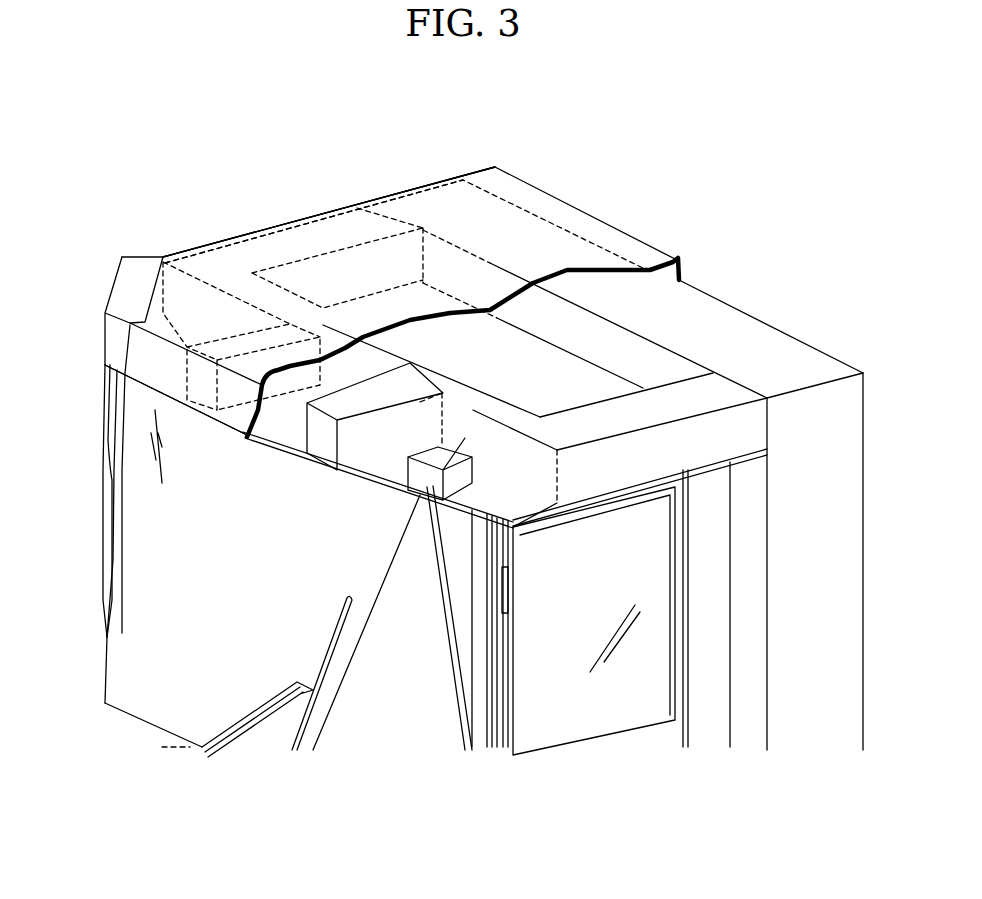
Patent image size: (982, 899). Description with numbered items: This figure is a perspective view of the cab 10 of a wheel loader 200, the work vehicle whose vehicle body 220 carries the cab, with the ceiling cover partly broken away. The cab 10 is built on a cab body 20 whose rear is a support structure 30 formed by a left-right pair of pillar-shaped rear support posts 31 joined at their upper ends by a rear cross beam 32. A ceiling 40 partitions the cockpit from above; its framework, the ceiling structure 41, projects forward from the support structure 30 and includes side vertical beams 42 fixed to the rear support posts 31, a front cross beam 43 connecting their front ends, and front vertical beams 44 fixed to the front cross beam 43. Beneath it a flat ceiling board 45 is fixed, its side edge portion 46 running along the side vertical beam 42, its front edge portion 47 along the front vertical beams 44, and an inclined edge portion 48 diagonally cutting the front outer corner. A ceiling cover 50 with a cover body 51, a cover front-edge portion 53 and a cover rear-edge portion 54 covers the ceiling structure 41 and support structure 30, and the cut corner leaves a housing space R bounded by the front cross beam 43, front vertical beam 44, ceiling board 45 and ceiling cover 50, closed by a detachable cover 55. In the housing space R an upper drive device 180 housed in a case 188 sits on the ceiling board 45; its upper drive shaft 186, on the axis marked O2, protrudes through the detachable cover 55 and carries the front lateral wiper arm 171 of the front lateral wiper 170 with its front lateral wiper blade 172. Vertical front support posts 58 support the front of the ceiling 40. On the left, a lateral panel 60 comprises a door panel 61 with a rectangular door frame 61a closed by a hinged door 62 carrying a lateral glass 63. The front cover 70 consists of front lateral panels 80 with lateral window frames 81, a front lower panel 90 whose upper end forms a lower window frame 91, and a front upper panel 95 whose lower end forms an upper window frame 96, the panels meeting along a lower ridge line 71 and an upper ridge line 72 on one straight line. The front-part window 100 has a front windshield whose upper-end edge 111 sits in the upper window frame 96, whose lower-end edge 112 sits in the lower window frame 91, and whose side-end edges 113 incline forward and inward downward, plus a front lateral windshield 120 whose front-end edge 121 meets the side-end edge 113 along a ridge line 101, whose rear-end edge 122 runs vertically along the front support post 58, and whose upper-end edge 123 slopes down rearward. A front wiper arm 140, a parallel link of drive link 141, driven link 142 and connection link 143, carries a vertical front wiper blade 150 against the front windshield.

The cab 10 is at (172, 205).
The cab body 20 is at (267, 218).
The support structure 30 is at (860, 547).
The rear support post 31 is at (845, 467).
The rear cross beam 32 is at (747, 332).
The ceiling 40 is at (488, 162).
The ceiling structure 41 is at (662, 378).
The side vertical beam 42 is at (580, 420).
The front cross beam 43 is at (515, 412).
The front vertical beam 44 is at (242, 331).
The ceiling board 45 is at (270, 425).
The side edge portion 46 is at (683, 487).
The front edge portion 47 is at (270, 447).
The inclined edge portion 48 is at (385, 492).
The ceiling cover 50 is at (313, 240).
The cover body 51 is at (440, 198).
The cover front-edge portion 53 is at (143, 350).
The cover rear-edge portion 54 is at (682, 267).
The detachable cover 55 is at (140, 272).
The front support post 58 is at (503, 737).
The lateral panel 60 is at (737, 643).
The door panel 61 is at (717, 548).
The door frame 61a is at (688, 584).
The door 62 is at (670, 737).
The lateral glass 63 is at (663, 673).
The front cover 70 is at (103, 729).
The lower ridge line 71 is at (105, 715).
The upper ridge line 72 is at (433, 505).
The front lateral panel 80 is at (483, 668).
The lateral window frame 81 is at (465, 627).
The front lower panel 90 is at (107, 740).
The lower window frame 91 is at (125, 702).
The front upper panel 95 is at (408, 497).
The upper window frame 96 is at (425, 503).
The front-part window 100 is at (147, 527).
The ridge line 101 is at (107, 647).
The upper-end edge 111 is at (393, 493).
The lower-end edge 112 is at (157, 730).
The side-end edge 113 is at (106, 677).
The front lateral windshield 120 is at (410, 737).
The front-end edge 121 is at (320, 743).
The rear-end edge 122 is at (477, 703).
The upper-end edge 123 is at (470, 518).
The front wiper arm 140 is at (247, 712).
The drive link 141 is at (215, 740).
The driven link 142 is at (273, 717).
The connection link 143 is at (309, 687).
The front wiper blade 150 is at (337, 653).
The front lateral wiper 170 is at (460, 740).
The front lateral wiper arm 171 is at (447, 553).
The front lateral wiper blade 172 is at (456, 735).
The upper drive device 180 is at (433, 444).
The upper drive shaft 186 is at (410, 483).
The case 188 is at (418, 452).
The wheel loader 200 is at (259, 131).
The vehicle body 220 is at (318, 155).
The housing space R is at (495, 495).
The pivot axis O2 is at (462, 447).